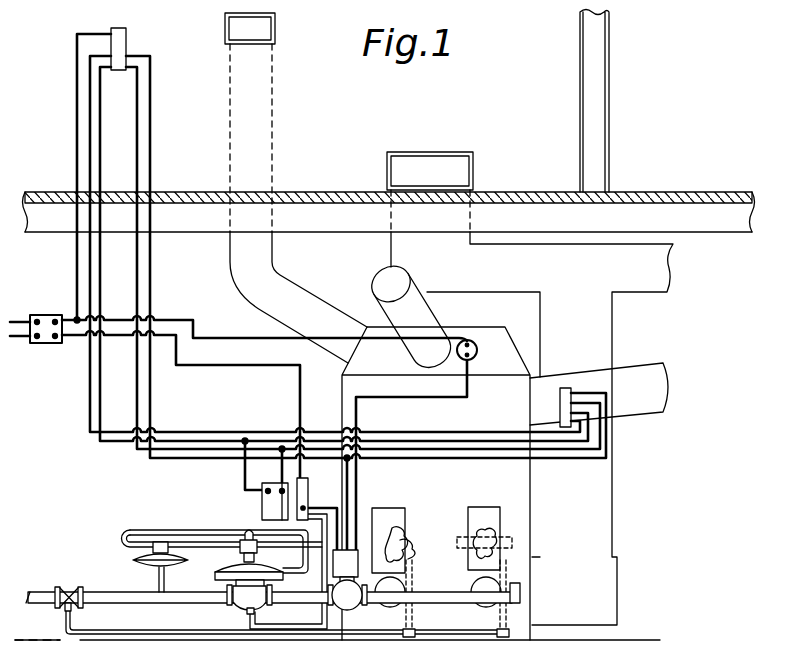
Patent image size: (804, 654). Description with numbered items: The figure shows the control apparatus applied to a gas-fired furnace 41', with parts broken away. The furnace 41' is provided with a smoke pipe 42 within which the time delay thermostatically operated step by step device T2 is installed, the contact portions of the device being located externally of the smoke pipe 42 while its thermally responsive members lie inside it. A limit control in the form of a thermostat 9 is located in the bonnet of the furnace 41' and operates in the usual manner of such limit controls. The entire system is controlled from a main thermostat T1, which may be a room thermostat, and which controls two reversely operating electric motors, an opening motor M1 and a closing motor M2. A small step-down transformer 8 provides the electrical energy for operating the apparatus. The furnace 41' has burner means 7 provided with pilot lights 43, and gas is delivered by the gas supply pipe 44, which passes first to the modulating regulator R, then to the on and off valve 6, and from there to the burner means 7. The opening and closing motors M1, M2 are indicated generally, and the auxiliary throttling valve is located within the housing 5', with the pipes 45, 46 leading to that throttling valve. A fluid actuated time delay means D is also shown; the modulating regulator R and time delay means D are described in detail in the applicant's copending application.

The main thermostat T1 is at (141, 48).
The time delay thermostatically operated step by step device T2 is at (569, 380).
The step-down transformer 8 is at (44, 315).
The limit control thermostat 9 is at (475, 343).
The smoke pipe 42 is at (629, 412).
The furnace 41' is at (567, 424).
The pilot lights 43 is at (510, 565).
The burner means 7 is at (457, 535).
The on and off valve 6 is at (354, 616).
The pipe 46 is at (328, 547).
The housing 5' is at (315, 496).
The opening motor M1 is at (262, 492).
The closing motor M2 is at (281, 505).
The gas supply pipe 44 is at (45, 591).
The fluid actuated time delay means D is at (131, 573).
The modulating regulator R is at (234, 615).
The pipe 45 is at (306, 578).